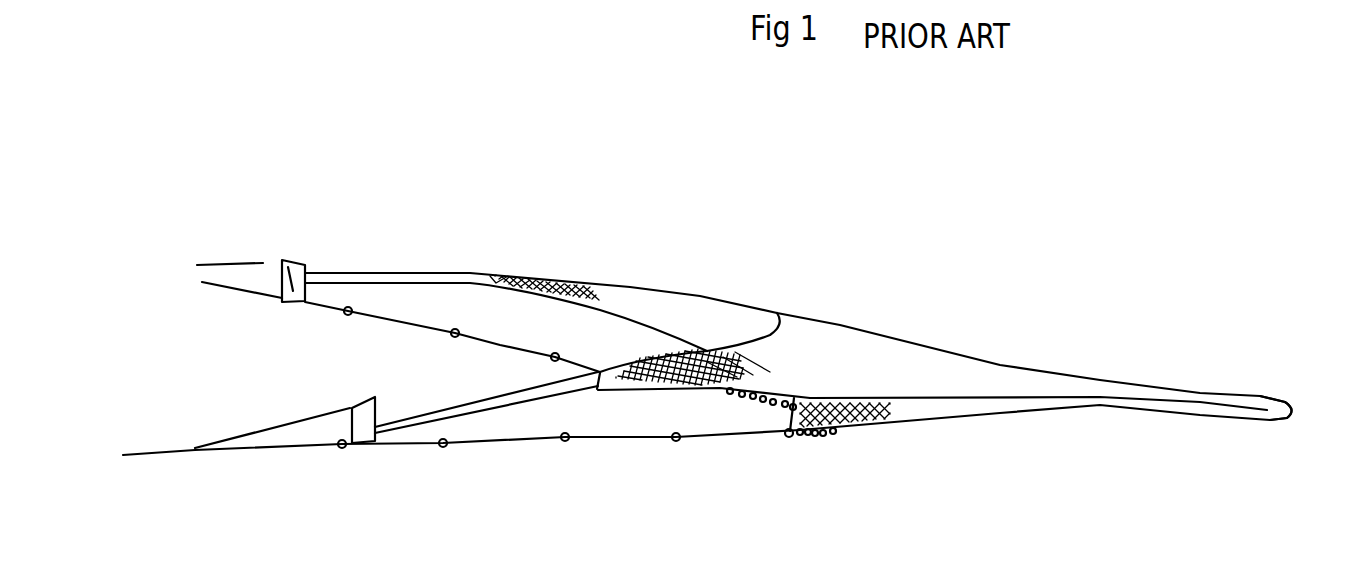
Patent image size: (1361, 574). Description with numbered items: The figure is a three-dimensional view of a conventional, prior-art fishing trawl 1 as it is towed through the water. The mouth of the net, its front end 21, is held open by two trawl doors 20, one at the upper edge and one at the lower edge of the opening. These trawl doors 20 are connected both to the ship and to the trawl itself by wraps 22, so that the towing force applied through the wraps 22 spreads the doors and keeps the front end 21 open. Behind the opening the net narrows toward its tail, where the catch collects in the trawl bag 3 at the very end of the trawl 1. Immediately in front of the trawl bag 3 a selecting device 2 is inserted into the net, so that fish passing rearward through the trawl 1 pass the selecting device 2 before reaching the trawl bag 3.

The fishing trawl 1 is at (833, 327).
The selecting device 2 is at (1204, 363).
The trawl bag 3 is at (1280, 403).
The trawl doors 20 is at (285, 263).
The front end 21 is at (698, 300).
The wraps 22 is at (237, 450).